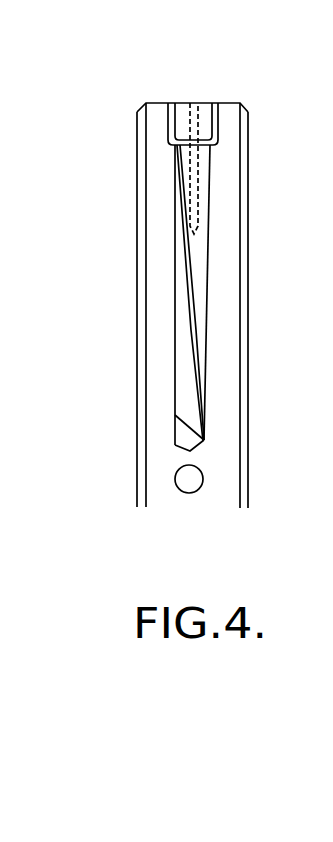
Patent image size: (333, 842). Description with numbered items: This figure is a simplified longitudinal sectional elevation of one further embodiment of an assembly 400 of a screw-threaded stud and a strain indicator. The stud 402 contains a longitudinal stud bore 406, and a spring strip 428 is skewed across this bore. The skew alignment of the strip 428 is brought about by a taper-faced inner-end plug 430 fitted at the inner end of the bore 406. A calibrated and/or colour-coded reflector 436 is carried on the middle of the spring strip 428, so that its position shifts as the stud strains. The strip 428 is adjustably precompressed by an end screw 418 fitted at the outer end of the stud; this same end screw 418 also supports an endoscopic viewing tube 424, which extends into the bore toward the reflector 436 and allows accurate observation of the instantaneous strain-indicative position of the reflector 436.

The assembly 400 is at (156, 92).
The housing body 402 is at (160, 185).
The stud bore 406 is at (173, 375).
The end screw 418 is at (203, 117).
The endoscopic viewing tube 424 is at (198, 192).
The spring strip 428 is at (185, 262).
The taper-faced inner-end plug 430 is at (178, 435).
The reflector 436 is at (247, 295).